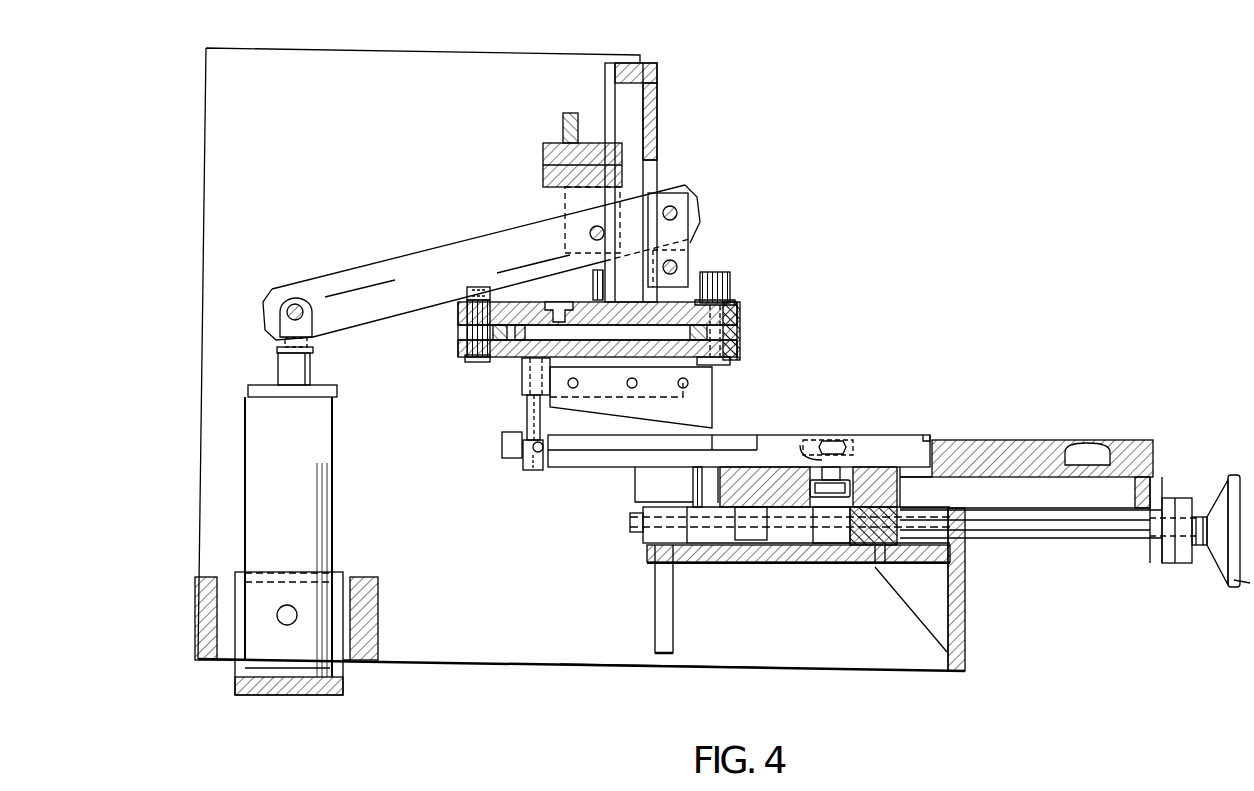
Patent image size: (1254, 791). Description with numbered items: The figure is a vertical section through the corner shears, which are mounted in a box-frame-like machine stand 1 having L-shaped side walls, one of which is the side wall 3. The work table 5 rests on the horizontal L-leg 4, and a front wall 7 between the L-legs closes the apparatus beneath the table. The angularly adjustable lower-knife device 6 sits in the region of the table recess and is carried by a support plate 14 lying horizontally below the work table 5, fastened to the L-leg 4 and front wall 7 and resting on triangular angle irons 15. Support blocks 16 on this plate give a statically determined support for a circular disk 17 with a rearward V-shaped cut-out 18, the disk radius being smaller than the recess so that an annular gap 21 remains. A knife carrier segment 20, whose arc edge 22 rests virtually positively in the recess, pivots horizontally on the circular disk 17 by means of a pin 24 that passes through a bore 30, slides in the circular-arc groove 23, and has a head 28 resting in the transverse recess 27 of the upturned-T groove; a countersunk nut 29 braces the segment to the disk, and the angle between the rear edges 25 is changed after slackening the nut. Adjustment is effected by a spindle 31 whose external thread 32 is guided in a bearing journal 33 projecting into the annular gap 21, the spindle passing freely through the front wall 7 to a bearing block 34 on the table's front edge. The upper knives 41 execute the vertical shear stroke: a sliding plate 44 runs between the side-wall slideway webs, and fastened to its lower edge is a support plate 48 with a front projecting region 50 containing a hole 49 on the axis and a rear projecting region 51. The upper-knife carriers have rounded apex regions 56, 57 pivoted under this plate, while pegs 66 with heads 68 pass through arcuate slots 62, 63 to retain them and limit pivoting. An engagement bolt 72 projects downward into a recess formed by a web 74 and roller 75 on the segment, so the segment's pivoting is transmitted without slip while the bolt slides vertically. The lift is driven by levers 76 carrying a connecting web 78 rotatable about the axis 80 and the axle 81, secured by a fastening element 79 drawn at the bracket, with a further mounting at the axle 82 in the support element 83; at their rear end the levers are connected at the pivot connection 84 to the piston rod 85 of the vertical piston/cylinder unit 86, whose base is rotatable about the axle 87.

The machine stand 1 is at (560, 657).
The side wall 3 is at (224, 101).
The horizontal L-leg 4 is at (800, 661).
The work table 5 is at (1040, 440).
The lower-knife device 6 is at (838, 425).
The front wall 7 is at (966, 612).
The support plate 14 is at (772, 563).
The triangular angle iron 15 is at (665, 655).
The support block 16 is at (677, 545).
The circular disk 17 is at (890, 470).
The V-shaped cut-out 18 is at (650, 490).
The knife carrier segment 20 is at (770, 445).
The annular gap 21 is at (915, 477).
The arc edge 22 is at (926, 440).
The groove 23 is at (850, 470).
The pin 24 is at (808, 440).
The rear edge 25 is at (594, 438).
The transverse recess 27 is at (825, 505).
The head 28 is at (862, 532).
The nut 29 is at (842, 446).
The bore 30 is at (825, 464).
The spindle 31 is at (1088, 532).
The external thread 32 is at (638, 533).
The bearing journal 33 is at (745, 542).
The bearing block 34 is at (1178, 495).
The upper knife 41 is at (712, 385).
The sliding plate 44 is at (658, 106).
The support plate 48 is at (618, 320).
The hole 49 is at (740, 318).
The front projecting region 50 is at (740, 304).
The rear projecting region 51 is at (460, 315).
The segment-apex region 56 is at (740, 336).
The segment-apex region 57 is at (740, 352).
The arcuate slot 62 is at (512, 345).
The arcuate slot 63 is at (460, 348).
The peg 66 is at (478, 290).
The head 68 is at (478, 365).
The engagement bolt 72 is at (527, 418).
The web 74 is at (510, 458).
The roller 75 is at (535, 472).
The lever 76 is at (377, 264).
The connecting web 78 is at (688, 236).
The screw 79 is at (712, 270).
The axis 80 is at (677, 210).
The axle 81 is at (680, 262).
The axle 82 is at (590, 234).
The support element 83 is at (557, 140).
The pivot connection 84 is at (300, 305).
The piston rod 85 is at (278, 366).
The piston/cylinder unit 86 is at (318, 530).
The axle 87 is at (290, 625).